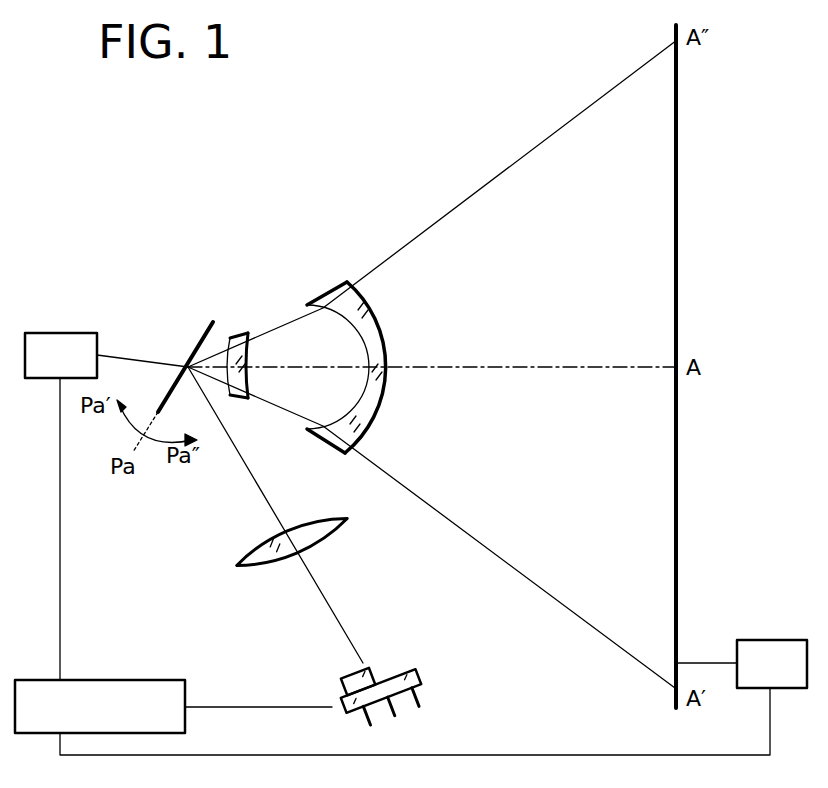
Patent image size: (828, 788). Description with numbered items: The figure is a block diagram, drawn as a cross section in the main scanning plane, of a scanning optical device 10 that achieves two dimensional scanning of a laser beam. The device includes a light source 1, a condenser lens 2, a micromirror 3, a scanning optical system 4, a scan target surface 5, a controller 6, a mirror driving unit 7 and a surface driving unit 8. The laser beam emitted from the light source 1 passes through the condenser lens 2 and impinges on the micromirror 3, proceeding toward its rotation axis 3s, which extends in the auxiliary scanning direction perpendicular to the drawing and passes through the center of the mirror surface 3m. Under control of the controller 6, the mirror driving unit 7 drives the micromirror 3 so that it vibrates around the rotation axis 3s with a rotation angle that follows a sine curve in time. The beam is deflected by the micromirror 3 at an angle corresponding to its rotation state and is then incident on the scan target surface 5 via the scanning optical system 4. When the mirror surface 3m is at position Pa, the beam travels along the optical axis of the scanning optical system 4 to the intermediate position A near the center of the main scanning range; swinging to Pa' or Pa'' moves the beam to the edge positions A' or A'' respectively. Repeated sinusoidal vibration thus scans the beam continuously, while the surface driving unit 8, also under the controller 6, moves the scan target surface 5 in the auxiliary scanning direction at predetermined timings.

The light source 1 is at (392, 665).
The condenser lens 2 is at (262, 563).
The micromirror 3 is at (208, 331).
The rotation axis 3s is at (182, 361).
The mirror surface 3m is at (213, 333).
The scanning optical system 4 is at (296, 430).
The scan target surface 5 is at (672, 697).
The controller 6 is at (82, 680).
The mirror driving unit 7 is at (62, 333).
The surface driving unit 8 is at (772, 640).
The scanning optical device 10 is at (349, 149).